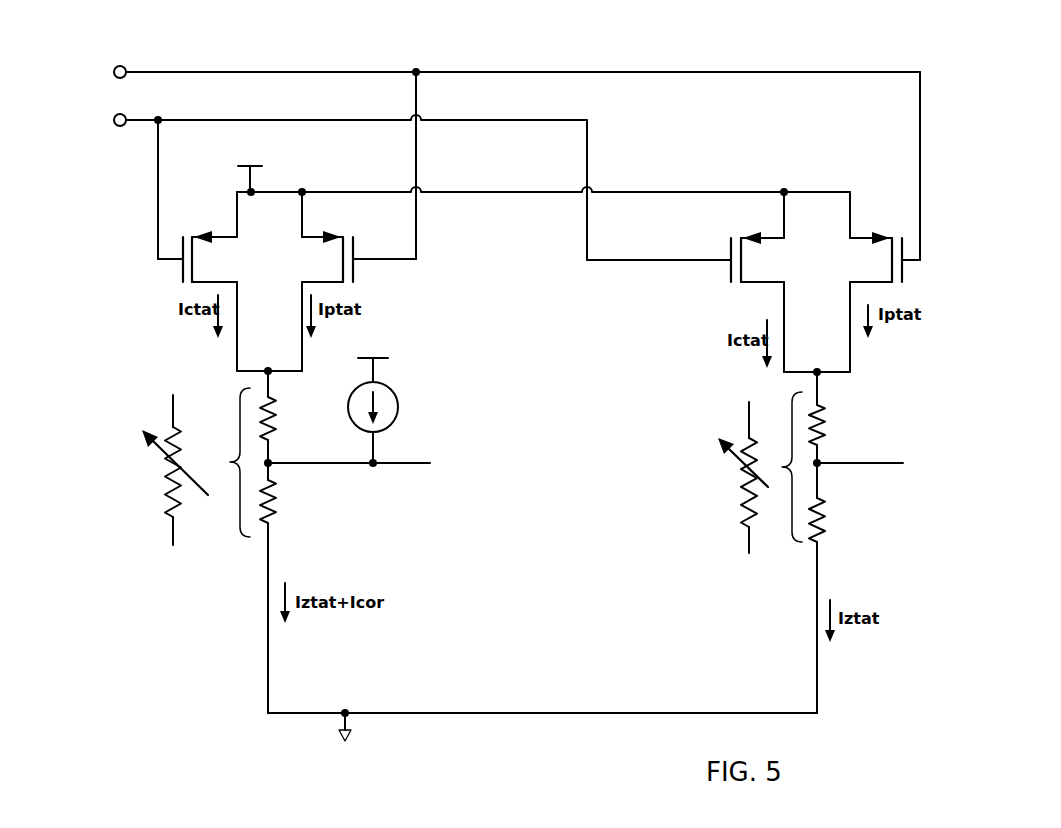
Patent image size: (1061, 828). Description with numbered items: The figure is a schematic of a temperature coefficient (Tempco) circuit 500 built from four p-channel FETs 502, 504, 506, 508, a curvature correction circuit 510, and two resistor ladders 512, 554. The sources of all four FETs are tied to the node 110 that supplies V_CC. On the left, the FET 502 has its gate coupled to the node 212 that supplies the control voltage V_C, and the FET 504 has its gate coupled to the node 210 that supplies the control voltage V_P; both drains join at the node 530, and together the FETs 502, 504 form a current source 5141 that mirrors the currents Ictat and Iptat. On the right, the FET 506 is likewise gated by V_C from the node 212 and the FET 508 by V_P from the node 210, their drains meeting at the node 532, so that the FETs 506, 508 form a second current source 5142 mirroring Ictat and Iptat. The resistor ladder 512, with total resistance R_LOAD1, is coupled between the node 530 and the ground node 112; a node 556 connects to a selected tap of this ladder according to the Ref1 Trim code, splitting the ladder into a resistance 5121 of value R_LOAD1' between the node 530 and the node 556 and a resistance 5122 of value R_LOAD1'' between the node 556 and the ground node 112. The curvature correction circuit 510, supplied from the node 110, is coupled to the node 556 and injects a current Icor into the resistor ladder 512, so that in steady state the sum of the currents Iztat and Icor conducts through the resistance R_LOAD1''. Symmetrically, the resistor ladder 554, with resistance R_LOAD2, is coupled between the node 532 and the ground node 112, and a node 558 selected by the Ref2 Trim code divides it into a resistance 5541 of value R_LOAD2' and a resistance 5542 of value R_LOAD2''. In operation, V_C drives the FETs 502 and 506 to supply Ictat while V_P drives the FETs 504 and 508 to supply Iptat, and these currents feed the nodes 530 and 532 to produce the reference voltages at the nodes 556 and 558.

The Tempco circuit 500 is at (963, 106).
The node 210 is at (117, 64).
The node 212 is at (123, 131).
The node 110 is at (241, 167).
The ground node 112 is at (350, 733).
The p-channel FET 502 is at (183, 268).
The p-channel FET 504 is at (356, 272).
The p-channel FET 506 is at (730, 272).
The p-channel FET 508 is at (905, 272).
The curvature correction circuit 510 is at (385, 432).
The resistor ladder 512 is at (178, 514).
The resistance 5121 is at (281, 410).
The resistance 5122 is at (265, 527).
The current source 5141 is at (447, 241).
The current source 5142 is at (992, 277).
The node 530 is at (268, 369).
The node 532 is at (817, 370).
The resistor ladder 554 is at (758, 527).
The resistance 5541 is at (825, 408).
The resistance 5542 is at (828, 515).
The node 556 is at (306, 468).
The node 558 is at (845, 468).